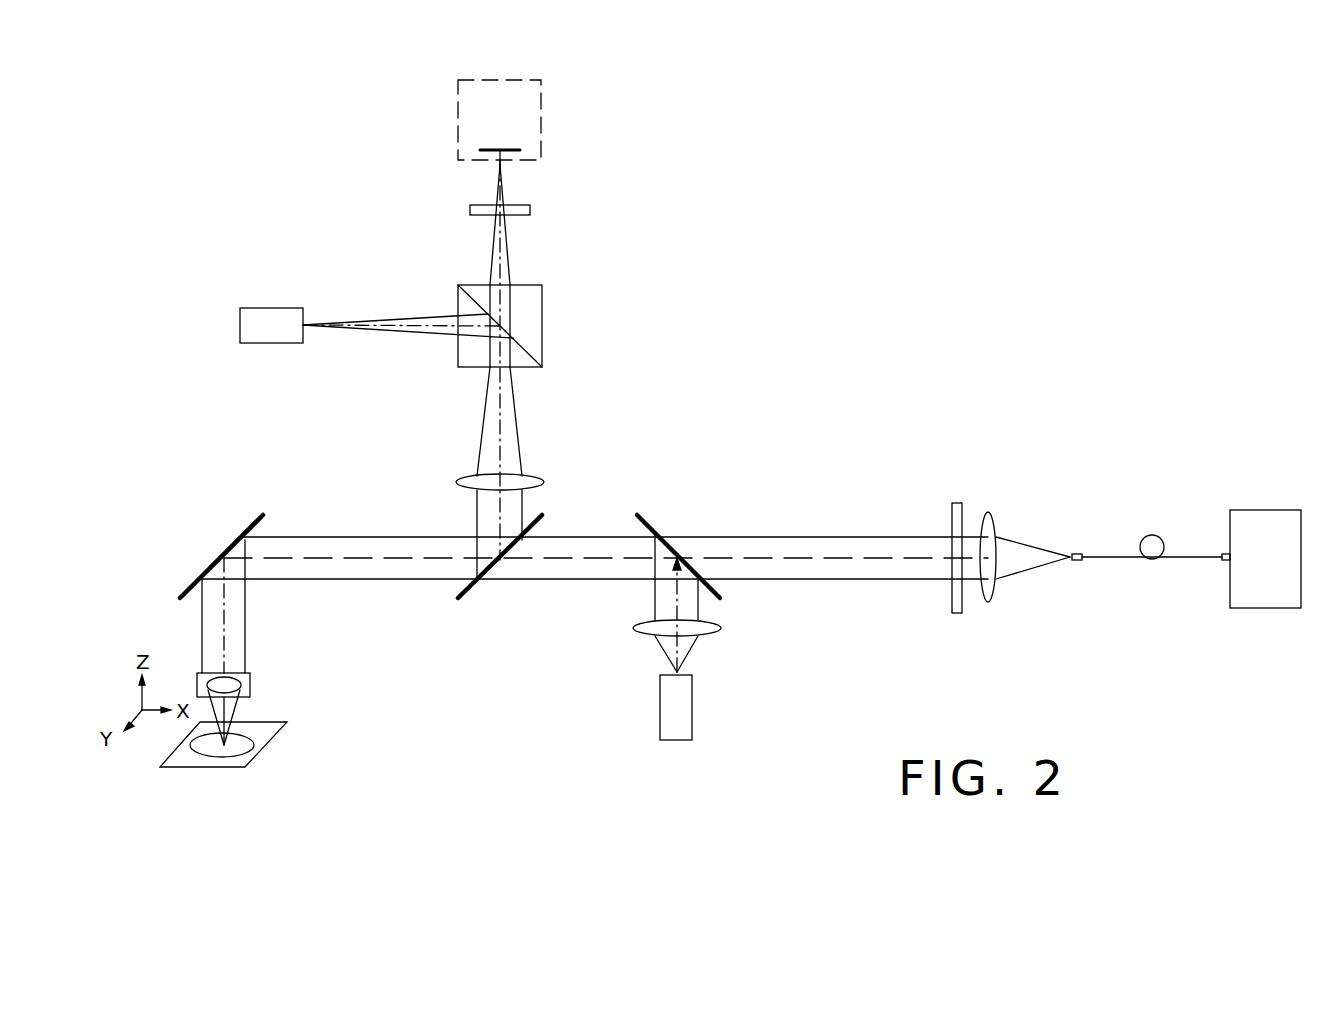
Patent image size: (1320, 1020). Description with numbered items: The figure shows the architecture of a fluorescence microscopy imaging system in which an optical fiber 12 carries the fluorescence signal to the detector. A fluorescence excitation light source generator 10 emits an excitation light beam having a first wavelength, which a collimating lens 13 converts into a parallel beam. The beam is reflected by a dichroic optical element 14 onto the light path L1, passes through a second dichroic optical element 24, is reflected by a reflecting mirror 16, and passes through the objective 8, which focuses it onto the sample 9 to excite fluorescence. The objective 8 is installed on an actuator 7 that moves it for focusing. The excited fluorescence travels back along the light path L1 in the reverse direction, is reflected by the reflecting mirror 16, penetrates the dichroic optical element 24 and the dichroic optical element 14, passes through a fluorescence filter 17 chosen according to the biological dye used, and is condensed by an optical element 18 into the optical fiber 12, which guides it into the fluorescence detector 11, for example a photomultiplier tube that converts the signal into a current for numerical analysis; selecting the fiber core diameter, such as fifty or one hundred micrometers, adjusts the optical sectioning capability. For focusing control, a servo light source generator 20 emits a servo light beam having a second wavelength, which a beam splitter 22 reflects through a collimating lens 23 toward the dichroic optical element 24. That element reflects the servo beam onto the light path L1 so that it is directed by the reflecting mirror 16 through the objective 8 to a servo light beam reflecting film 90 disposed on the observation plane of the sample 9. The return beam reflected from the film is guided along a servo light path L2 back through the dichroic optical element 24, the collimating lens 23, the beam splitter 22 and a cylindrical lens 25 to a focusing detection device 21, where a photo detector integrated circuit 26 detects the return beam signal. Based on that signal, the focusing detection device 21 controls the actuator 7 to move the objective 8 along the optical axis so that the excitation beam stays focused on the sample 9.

The actuator 7 is at (247, 678).
The objective 8 is at (245, 686).
The sample 9 is at (255, 742).
The servo light beam reflecting film 90 is at (235, 762).
The fluorescence excitation light source generator 10 is at (678, 710).
The fluorescence detector 11 is at (1255, 593).
The optical fiber 12 is at (1143, 540).
The collimating lens 13 is at (700, 630).
The dichroic optical element 14 is at (645, 522).
The reflecting mirror 16 is at (235, 545).
The fluorescence filter 17 is at (952, 520).
The optical element 18 is at (990, 527).
The servo light source generator 20 is at (280, 333).
The focusing detection device 21 is at (543, 135).
The beam splitter 22 is at (543, 305).
The collimating lens 23 is at (525, 480).
The dichroic optical element 24 is at (470, 595).
The cylindrical lens 25 is at (525, 213).
The photo detector integrated circuit 26 is at (486, 150).
The light path L1 is at (846, 558).
The servo light path L2 is at (498, 433).